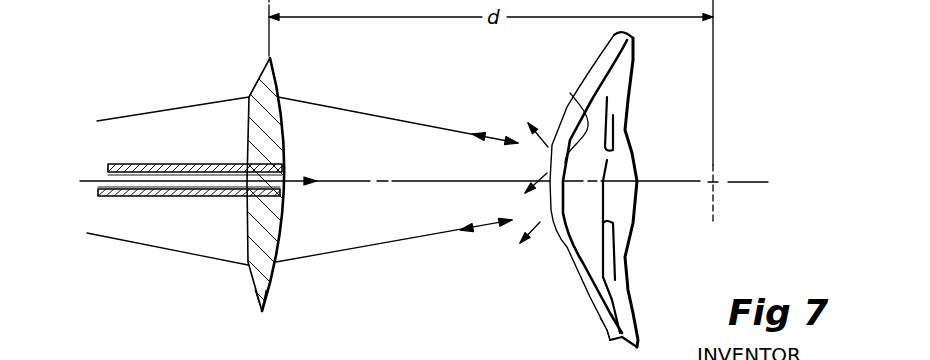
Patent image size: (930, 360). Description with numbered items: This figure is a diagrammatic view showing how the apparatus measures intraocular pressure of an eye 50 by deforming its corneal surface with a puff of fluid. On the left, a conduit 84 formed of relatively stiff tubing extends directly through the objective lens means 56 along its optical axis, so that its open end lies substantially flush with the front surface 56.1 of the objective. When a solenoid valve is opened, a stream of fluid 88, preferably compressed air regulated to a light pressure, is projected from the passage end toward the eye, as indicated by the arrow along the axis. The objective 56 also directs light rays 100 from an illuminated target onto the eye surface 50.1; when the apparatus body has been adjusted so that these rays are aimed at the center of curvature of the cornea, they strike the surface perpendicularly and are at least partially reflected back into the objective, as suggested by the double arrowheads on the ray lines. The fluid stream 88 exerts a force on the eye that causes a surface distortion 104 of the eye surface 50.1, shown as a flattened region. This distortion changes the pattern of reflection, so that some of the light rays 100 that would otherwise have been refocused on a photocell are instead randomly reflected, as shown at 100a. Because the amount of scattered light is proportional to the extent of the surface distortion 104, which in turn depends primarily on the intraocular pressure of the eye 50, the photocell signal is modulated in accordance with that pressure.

The eye 50 is at (631, 62).
The eye surface 50.1 is at (601, 323).
The objective lens means 56 is at (262, 78).
The front surface of the objective 56.1 is at (263, 309).
The conduit 84 is at (187, 163).
The stream of fluid 88 is at (297, 181).
The light rays 100 is at (418, 126).
The randomly reflected light rays 100a is at (549, 119).
The surface distortion 104 is at (566, 118).